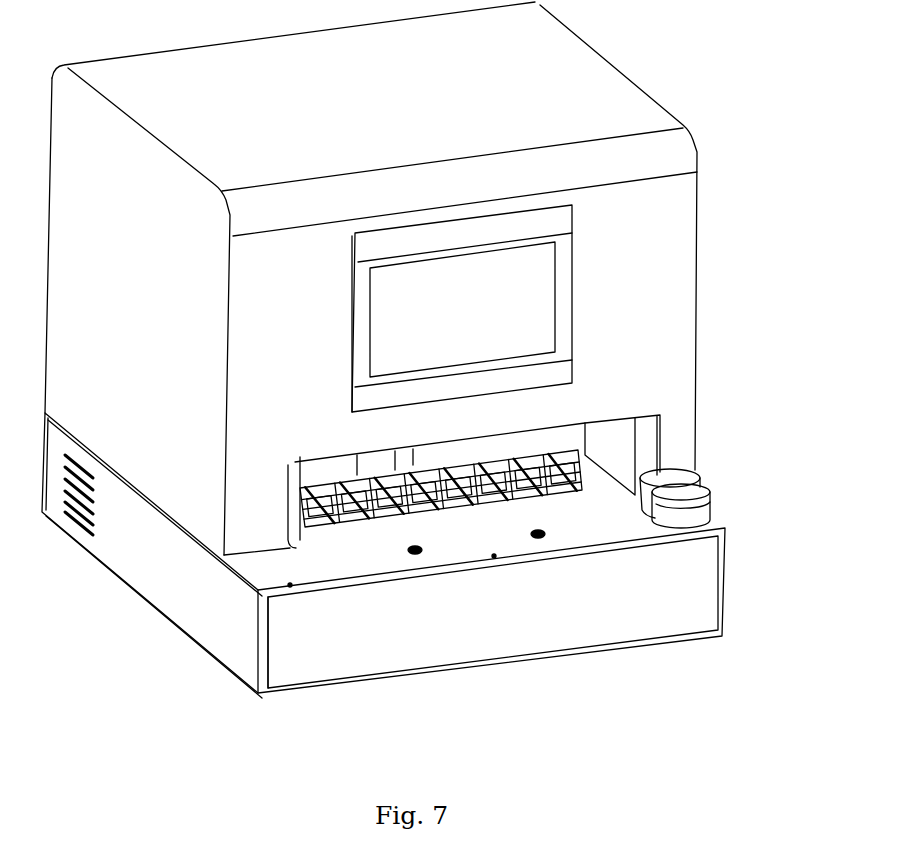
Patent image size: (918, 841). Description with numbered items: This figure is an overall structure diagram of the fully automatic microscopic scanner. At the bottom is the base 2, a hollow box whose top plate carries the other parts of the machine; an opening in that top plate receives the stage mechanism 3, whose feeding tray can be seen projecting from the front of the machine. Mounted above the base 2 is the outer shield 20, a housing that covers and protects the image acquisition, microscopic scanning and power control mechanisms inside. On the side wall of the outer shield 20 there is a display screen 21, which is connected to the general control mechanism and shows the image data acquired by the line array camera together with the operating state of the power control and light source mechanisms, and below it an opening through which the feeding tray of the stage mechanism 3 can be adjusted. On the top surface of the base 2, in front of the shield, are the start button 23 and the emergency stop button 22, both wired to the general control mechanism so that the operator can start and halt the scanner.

The base 2 is at (172, 588).
The stage mechanism 3 is at (445, 462).
The outer shield 20 is at (608, 98).
The display screen 21 is at (500, 313).
The emergency stop button 22 is at (693, 502).
The start button 23 is at (430, 553).